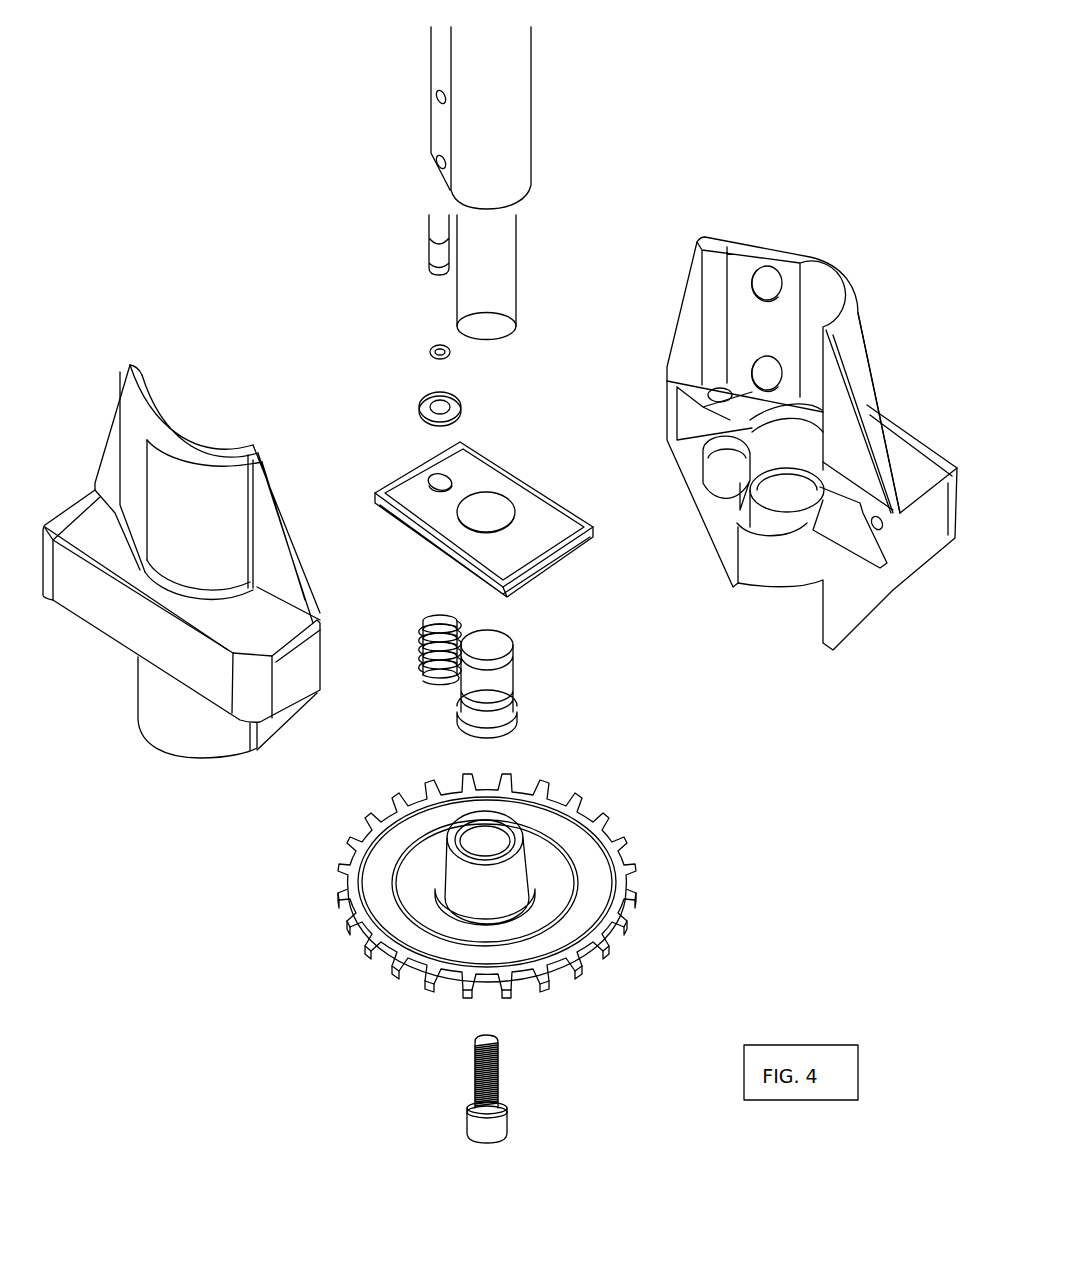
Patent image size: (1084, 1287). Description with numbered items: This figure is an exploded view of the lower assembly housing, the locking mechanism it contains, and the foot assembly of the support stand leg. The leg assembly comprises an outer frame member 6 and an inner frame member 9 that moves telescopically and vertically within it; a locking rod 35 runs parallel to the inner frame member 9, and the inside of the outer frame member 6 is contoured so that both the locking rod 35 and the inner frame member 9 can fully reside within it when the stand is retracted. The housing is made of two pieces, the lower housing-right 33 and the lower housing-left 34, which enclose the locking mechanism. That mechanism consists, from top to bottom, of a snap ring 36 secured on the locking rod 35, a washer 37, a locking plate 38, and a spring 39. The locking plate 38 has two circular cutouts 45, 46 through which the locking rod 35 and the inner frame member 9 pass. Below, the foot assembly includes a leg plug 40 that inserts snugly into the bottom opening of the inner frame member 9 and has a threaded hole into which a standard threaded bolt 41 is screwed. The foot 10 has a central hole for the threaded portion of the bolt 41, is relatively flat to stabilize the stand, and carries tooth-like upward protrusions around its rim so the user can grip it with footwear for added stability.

The outer frame member 6 is at (538, 162).
The inner frame member 9 is at (545, 272).
The foot 10 is at (322, 868).
The lower housing-right 33 is at (88, 370).
The lower housing-left 34 is at (877, 332).
The locking rod 35 is at (414, 239).
The snap ring 36 is at (423, 343).
The washer 37 is at (412, 405).
The locking plate 38 is at (502, 452).
The spring 39 is at (414, 687).
The leg plug 40 is at (545, 697).
The threaded bolt 41 is at (460, 1073).
The cutout 45 is at (423, 478).
The cutout 46 is at (493, 520).